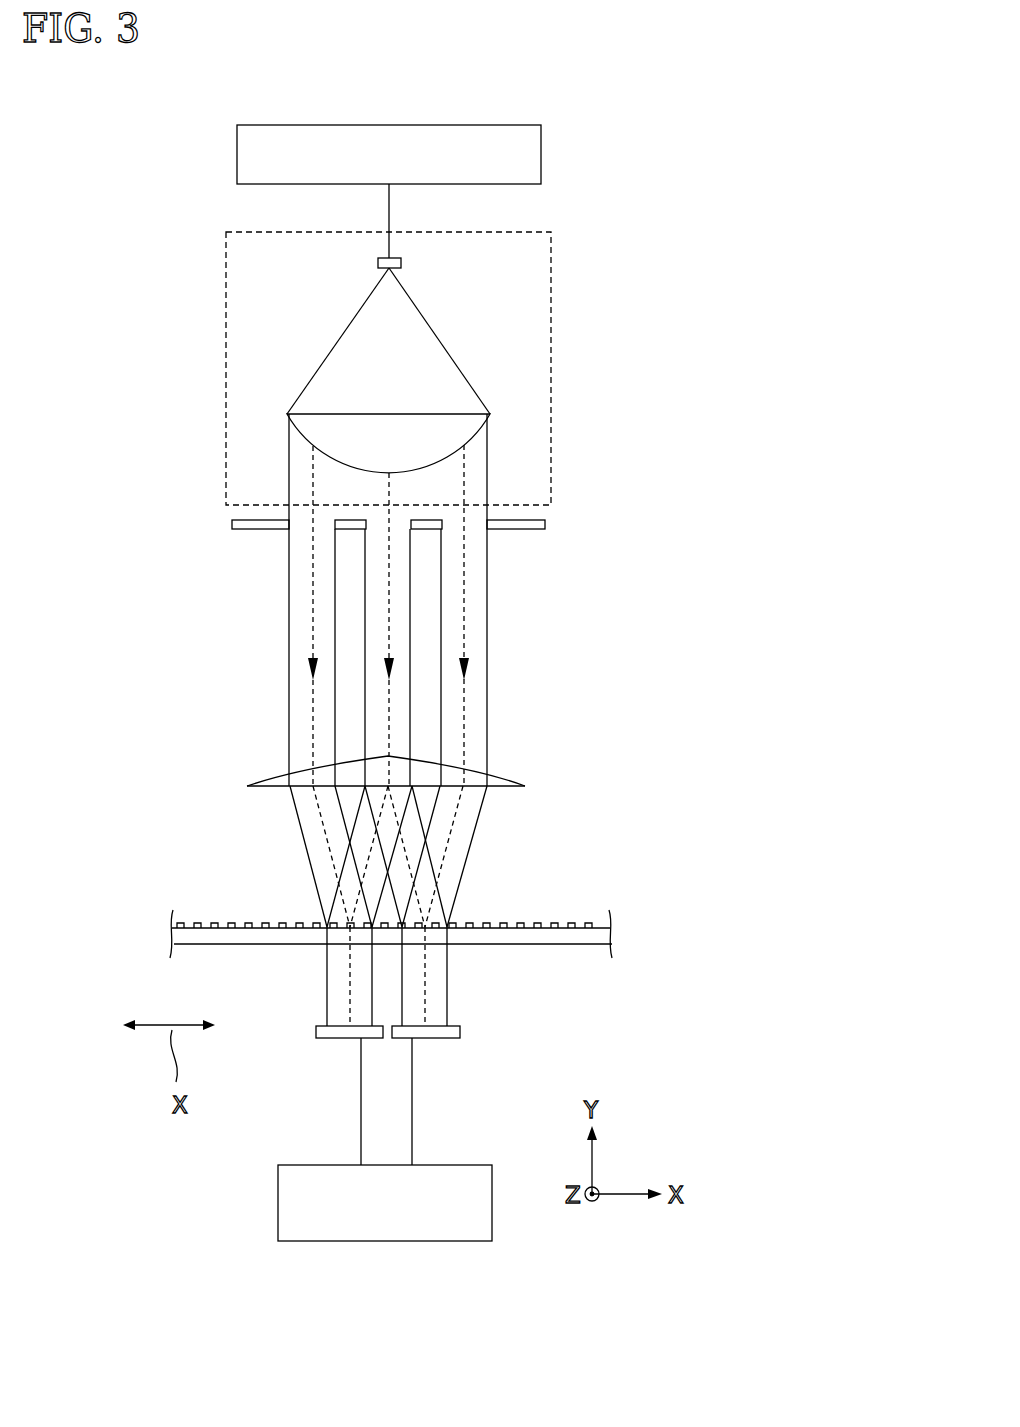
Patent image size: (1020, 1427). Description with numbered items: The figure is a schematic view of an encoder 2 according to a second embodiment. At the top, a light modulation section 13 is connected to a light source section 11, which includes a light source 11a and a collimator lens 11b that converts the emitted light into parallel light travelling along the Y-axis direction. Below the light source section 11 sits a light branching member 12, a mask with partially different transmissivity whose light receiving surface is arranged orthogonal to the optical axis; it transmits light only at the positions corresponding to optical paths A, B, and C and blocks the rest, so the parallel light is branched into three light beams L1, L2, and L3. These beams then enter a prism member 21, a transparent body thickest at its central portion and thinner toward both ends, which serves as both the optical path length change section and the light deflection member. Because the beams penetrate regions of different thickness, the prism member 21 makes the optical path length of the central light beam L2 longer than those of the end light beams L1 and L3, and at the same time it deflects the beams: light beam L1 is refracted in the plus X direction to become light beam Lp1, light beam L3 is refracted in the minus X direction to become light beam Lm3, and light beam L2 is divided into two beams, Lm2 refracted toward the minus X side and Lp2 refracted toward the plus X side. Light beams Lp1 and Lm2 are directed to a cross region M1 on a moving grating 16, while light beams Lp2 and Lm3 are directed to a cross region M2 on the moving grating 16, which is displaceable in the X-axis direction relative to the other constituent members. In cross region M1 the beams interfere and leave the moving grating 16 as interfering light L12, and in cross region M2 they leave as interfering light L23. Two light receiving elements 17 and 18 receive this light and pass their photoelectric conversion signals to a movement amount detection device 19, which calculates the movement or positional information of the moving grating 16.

The encoder 2 is at (141, 224).
The light modulation section 13 is at (541, 152).
The light source section 11 is at (551, 240).
The light source 11a is at (401, 263).
The collimator lens 11b is at (440, 418).
The light branching member 12 is at (547, 523).
The light beam L1 is at (280, 623).
The light beam L2 is at (418, 607).
The light beam L3 is at (492, 640).
The optical path A is at (313, 697).
The optical path B is at (389, 554).
The optical path C is at (464, 700).
The prism member 21 is at (508, 783).
The light beam Lp1 is at (286, 797).
The light beam Lp2 is at (422, 797).
The light beam Lm2 is at (350, 808).
The light beam Lm3 is at (465, 845).
The cross region M1 is at (342, 925).
The cross region M2 is at (433, 925).
The moving grating 16 is at (587, 933).
The interfering light L12 is at (324, 995).
The interfering light L23 is at (455, 995).
The light receiving element 17 is at (328, 1040).
The light receiving element 18 is at (448, 1040).
The movement amount detection device 19 is at (388, 1241).